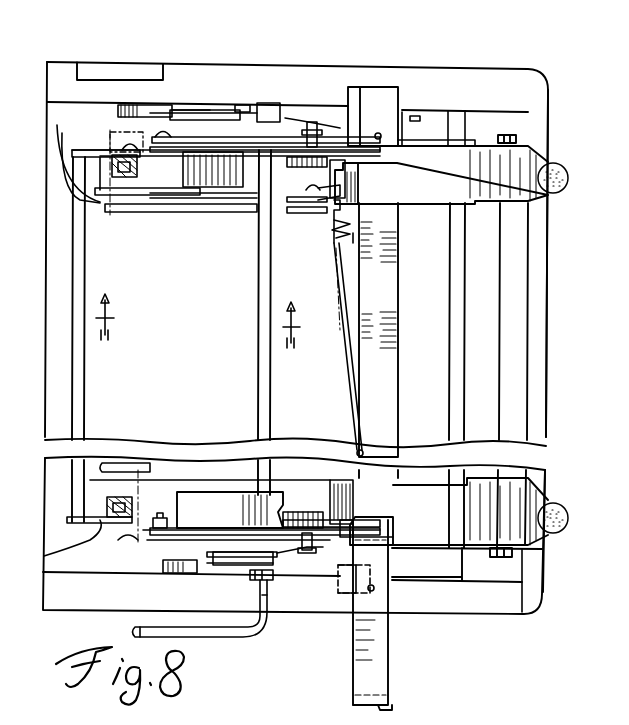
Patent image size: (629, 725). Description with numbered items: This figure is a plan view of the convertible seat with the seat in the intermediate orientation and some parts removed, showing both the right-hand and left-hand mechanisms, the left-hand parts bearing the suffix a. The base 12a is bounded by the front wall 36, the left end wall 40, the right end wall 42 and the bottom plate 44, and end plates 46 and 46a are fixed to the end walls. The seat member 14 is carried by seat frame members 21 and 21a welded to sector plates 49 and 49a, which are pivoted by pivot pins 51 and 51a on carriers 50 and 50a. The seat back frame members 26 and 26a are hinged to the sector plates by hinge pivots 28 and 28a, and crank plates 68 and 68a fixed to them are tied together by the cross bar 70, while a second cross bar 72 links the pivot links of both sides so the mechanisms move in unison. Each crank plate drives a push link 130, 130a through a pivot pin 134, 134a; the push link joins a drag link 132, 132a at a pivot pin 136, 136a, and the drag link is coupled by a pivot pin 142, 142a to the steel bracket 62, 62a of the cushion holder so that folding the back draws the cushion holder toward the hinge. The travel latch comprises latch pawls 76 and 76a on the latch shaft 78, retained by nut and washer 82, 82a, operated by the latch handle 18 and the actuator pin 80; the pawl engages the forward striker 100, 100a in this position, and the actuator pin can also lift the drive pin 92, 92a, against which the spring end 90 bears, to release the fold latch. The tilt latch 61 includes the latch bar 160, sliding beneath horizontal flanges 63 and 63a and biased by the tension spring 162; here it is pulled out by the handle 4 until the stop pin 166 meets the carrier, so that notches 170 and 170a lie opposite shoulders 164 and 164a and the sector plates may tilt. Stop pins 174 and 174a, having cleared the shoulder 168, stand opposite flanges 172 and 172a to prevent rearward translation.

The handle 4 is at (388, 705).
The base 12a is at (523, 54).
The seat member 14 is at (210, 317).
The latch handle 18 is at (246, 637).
The seat frame member 21 is at (285, 470).
The seat frame member 21a is at (182, 205).
The frame member 26 is at (155, 470).
The frame member 26a is at (140, 190).
The hinge pivot 28 is at (125, 540).
The hinge pivot 28a is at (130, 142).
The front wall 36 is at (549, 240).
The left end wall 40 is at (252, 100).
The right end wall 42 is at (507, 612).
The bottom plate 44 is at (515, 428).
The end plate 46 is at (300, 555).
The end plate 46a is at (307, 120).
The sector plate 49 is at (230, 518).
The sector plate 49a is at (295, 145).
The carrier 50 is at (213, 545).
The carrier 50a is at (235, 100).
The pivot pin 51 is at (165, 545).
The pivot pin 51a is at (180, 135).
The tilt latch 61 is at (404, 395).
The steel bracket 62 is at (145, 470).
The steel bracket 62a is at (200, 180).
The horizontal flange 63 is at (434, 480).
The horizontal flange 63a is at (437, 206).
The crank plate 68 is at (46, 557).
The crank plate 68a is at (88, 150).
The cross bar 70 is at (80, 388).
The cross bar 72 is at (500, 312).
The latch pawl 76 is at (190, 570).
The latch pawl 76a is at (245, 110).
The latch shaft 78 is at (260, 320).
The actuator pin 80 is at (228, 580).
The nut and washer 82 is at (256, 580).
The nut and washer 82a is at (255, 105).
The spring end 90 is at (278, 560).
The drive pin 92 is at (316, 550).
The drive pin 92a is at (312, 125).
The forward striker 100 is at (113, 580).
The forward striker 100a is at (128, 104).
The push link 130 is at (186, 470).
The push link 130a is at (236, 190).
The drag link 132 is at (221, 470).
The drag link 132a is at (180, 212).
The pivot pin 134 is at (118, 464).
The pivot pin 134a is at (76, 155).
The pivot pin 136 is at (336, 478).
The pivot pin 136a is at (328, 220).
The pivot pin 142 is at (140, 465).
The pivot pin 142a is at (130, 177).
The tilt latch bar 160 is at (390, 648).
The tension spring 162 is at (334, 344).
The shoulder 164 is at (375, 528).
The shoulder 164a is at (350, 160).
The stop pin 166 is at (400, 106).
The shoulder 168 is at (125, 130).
The notch 170 is at (375, 525).
The notch 170a is at (400, 162).
The flange 172 is at (340, 595).
The flange 172a is at (348, 87).
The stop pin 174 is at (375, 588).
The stop pin 174a is at (380, 130).